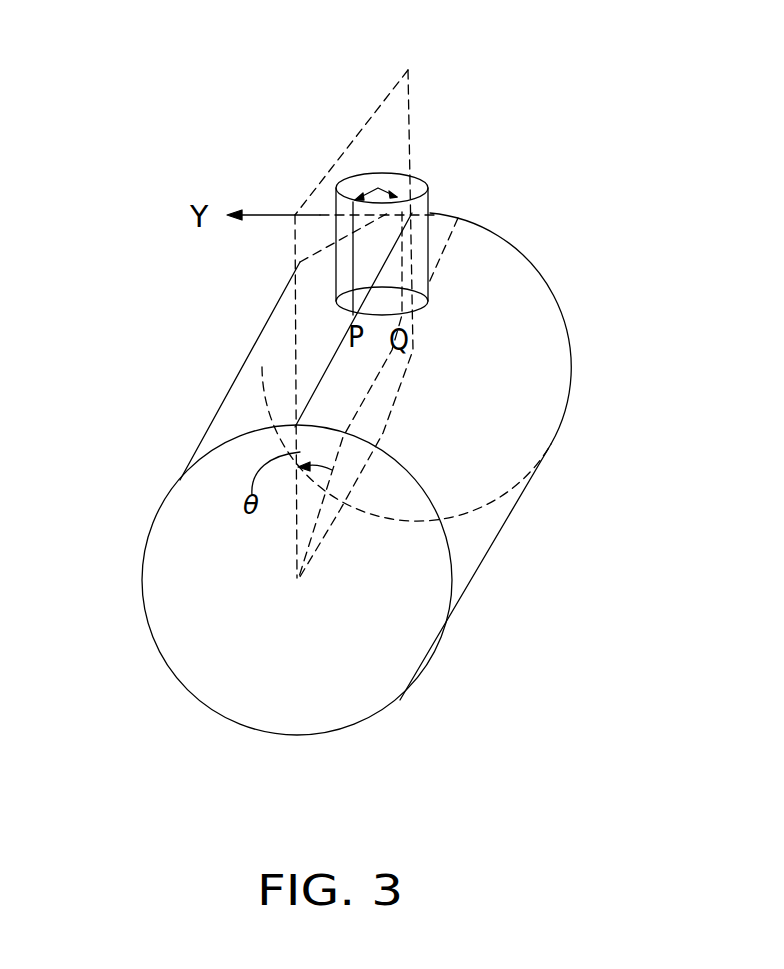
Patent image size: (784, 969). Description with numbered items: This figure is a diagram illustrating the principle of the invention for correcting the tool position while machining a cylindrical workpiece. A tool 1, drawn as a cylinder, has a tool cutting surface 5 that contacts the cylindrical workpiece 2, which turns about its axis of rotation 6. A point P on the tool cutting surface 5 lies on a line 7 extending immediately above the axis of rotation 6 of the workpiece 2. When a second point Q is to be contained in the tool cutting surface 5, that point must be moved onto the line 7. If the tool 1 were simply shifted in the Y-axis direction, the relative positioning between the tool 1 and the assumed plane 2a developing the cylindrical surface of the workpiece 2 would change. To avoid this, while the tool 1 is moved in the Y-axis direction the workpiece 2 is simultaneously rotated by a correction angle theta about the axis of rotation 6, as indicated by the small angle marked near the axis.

The tool 1 is at (430, 195).
The workpiece 2 is at (453, 620).
The assumed plane 2a is at (352, 378).
The tool cutting surface 5 is at (337, 265).
The axis of rotation 6 is at (408, 382).
The line 7 is at (325, 369).